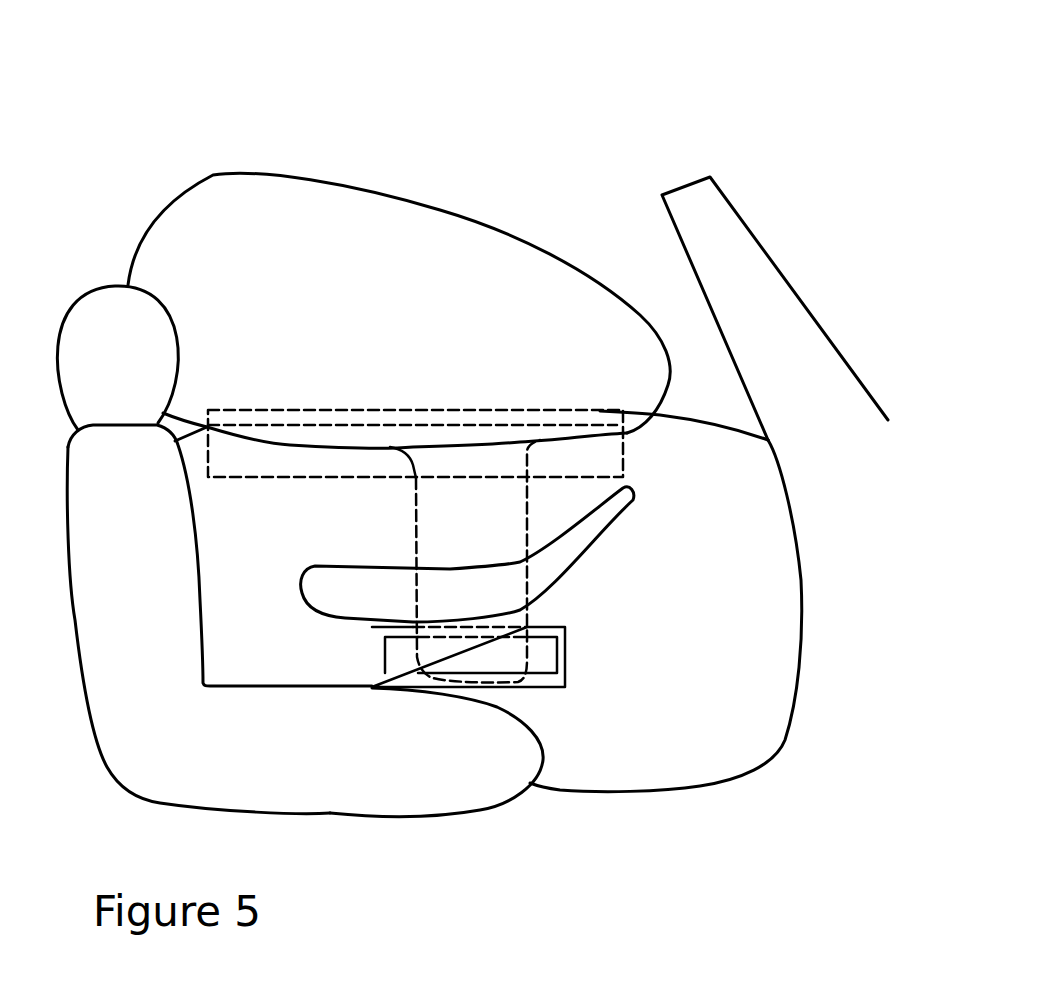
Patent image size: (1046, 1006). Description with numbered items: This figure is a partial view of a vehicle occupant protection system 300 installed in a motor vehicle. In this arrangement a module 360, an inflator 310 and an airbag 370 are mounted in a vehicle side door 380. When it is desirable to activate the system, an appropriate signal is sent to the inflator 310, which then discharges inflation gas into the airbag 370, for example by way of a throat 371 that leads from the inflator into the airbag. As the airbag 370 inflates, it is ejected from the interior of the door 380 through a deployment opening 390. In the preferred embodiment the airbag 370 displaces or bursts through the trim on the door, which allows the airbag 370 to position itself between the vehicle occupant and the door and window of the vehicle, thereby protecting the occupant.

The occupant protection system 300 is at (443, 170).
The airbag 370 is at (500, 240).
The deployment opening 390 is at (637, 447).
The throat 371 is at (430, 523).
The vehicle side door 380 is at (727, 562).
The module 360 is at (567, 632).
The inflator 310 is at (550, 673).